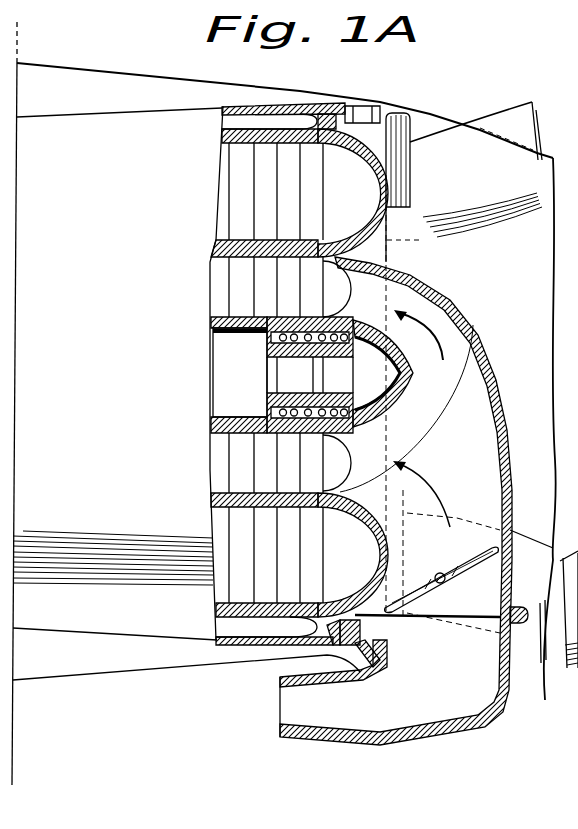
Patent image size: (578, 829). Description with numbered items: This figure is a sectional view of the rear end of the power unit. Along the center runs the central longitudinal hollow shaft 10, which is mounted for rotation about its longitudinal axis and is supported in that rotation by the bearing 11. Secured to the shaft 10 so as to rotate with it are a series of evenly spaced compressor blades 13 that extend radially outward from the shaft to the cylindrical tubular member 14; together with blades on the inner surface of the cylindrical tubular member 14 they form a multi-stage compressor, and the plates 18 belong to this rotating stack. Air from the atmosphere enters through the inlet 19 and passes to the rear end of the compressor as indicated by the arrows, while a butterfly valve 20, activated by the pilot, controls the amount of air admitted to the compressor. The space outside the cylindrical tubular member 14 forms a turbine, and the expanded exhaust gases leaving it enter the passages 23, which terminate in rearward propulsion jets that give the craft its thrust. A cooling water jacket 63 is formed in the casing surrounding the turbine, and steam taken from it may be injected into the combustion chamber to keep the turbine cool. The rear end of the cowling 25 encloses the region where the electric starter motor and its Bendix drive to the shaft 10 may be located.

The cowling 25 is at (422, 111).
The passages 23 is at (470, 143).
The compressor blades 13 is at (220, 313).
The central longitudinal hollow shaft 10 is at (230, 331).
The bearing 11 is at (295, 398).
The disc plate 18 is at (212, 438).
The cylindrical tubular member 14 is at (213, 504).
The butterfly valve 20 is at (464, 553).
The cooling water jacket 63 is at (222, 636).
The inlet 19 is at (303, 710).